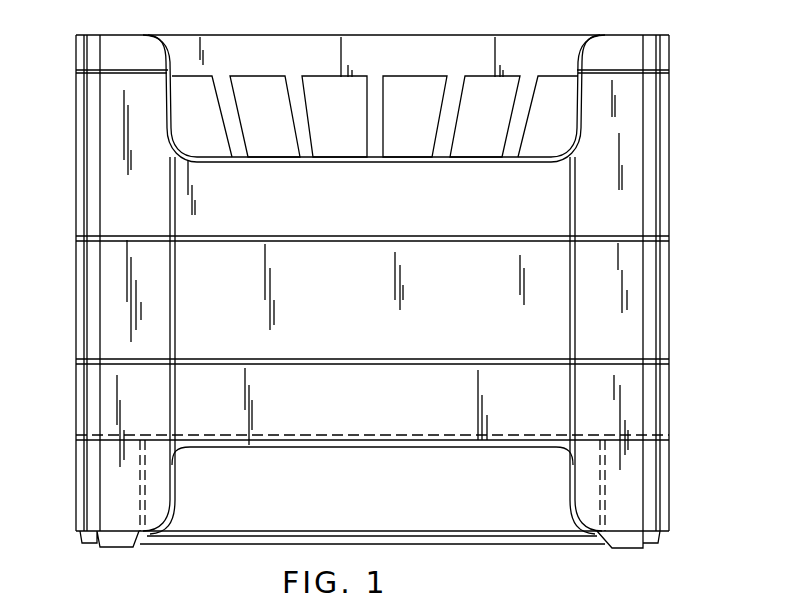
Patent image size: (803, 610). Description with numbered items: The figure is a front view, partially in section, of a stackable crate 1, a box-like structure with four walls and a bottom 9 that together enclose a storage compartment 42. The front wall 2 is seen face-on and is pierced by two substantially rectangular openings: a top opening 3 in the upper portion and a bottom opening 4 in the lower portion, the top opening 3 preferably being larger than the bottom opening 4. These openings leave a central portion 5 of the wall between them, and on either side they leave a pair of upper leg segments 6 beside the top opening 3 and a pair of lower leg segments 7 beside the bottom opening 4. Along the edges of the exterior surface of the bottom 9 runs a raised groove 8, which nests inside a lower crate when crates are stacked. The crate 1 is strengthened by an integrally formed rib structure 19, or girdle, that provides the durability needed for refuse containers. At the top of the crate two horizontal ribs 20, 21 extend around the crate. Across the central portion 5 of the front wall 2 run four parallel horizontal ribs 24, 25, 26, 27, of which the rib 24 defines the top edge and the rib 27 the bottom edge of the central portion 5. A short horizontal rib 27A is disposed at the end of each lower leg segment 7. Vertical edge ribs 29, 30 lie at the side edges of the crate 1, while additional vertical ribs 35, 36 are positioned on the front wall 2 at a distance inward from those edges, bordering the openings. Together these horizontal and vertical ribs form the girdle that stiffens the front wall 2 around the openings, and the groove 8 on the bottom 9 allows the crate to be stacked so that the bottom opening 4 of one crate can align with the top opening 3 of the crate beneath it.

The stackable crate 1 is at (107, 162).
The front wall 2 is at (628, 225).
The top opening 3 is at (550, 115).
The bottom opening 4 is at (538, 508).
The central portion 5 is at (558, 290).
The upper leg segments 6 is at (113, 106).
The lower leg segments 7 is at (108, 497).
The raised groove 8 is at (122, 540).
The bottom 9 is at (485, 540).
The rib structure 19 is at (86, 308).
The horizontal rib 20 is at (147, 35).
The horizontal rib 21 is at (108, 70).
The horizontal rib 24 is at (200, 157).
The horizontal rib 25 is at (188, 238).
The horizontal rib 26 is at (203, 362).
The horizontal rib 27 is at (280, 447).
The short horizontal rib 27A is at (145, 535).
The vertical edge rib 29 is at (86, 55).
The vertical edge rib 30 is at (663, 55).
The vertical rib 35 is at (176, 92).
The vertical rib 36 is at (568, 88).
The storage compartment 42 is at (415, 100).